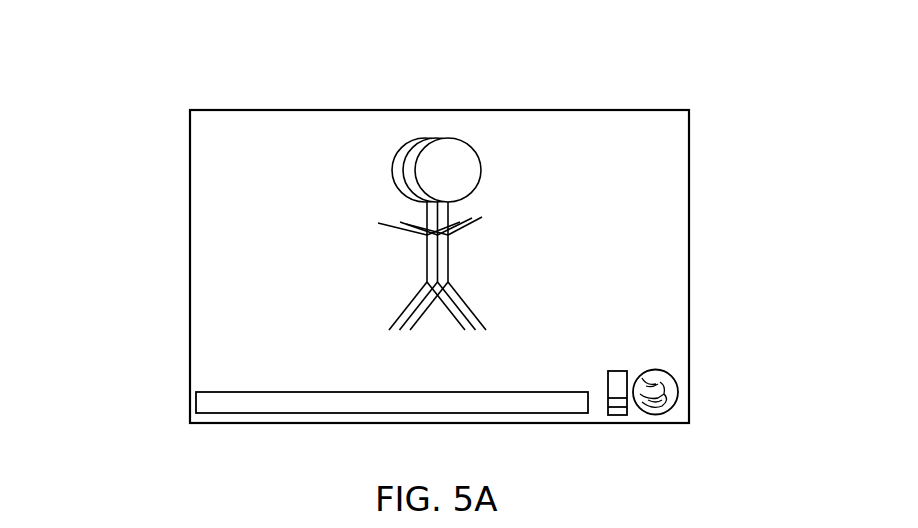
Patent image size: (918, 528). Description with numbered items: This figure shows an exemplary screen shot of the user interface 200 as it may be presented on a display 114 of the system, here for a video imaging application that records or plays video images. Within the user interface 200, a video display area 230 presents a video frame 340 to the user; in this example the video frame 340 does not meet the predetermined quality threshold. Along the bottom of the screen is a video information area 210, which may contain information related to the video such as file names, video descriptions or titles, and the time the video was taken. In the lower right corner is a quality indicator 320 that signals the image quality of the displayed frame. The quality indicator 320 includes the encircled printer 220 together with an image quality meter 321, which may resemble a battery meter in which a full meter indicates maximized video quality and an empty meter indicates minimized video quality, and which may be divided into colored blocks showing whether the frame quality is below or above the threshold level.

The display 114 is at (177, 130).
The user interface 200 is at (382, 108).
The video information area 210 is at (238, 402).
The encircled printer 220 is at (673, 388).
The video display area 230 is at (662, 173).
The quality indicator 320 is at (682, 410).
The image quality meter 321 is at (617, 407).
The video frame 340 is at (215, 275).